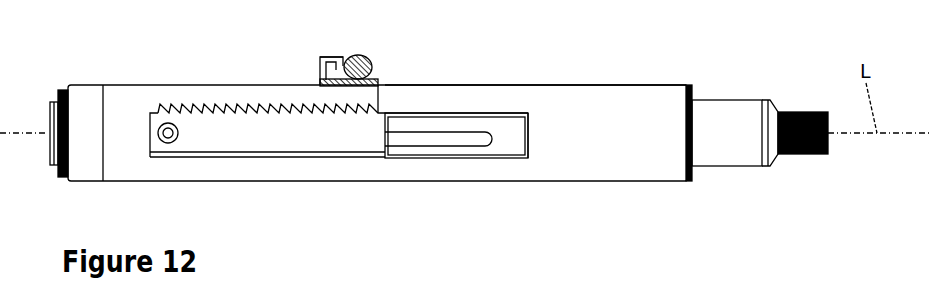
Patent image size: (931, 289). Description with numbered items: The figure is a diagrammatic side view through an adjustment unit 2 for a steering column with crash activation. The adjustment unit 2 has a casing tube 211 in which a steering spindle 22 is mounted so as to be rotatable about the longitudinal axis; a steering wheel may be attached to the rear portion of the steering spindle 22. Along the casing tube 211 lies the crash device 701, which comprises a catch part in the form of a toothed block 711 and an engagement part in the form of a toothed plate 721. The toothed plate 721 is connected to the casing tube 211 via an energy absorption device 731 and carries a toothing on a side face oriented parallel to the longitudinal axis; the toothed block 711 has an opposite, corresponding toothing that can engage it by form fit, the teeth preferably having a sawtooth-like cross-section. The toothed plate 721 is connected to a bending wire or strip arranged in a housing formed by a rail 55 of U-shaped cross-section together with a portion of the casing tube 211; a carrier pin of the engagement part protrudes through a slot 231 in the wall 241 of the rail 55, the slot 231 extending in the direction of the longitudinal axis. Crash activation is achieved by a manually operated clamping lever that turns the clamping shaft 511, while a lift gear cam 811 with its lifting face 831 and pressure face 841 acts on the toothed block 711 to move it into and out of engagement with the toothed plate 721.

The adjustment unit 2 is at (661, 60).
The casing tube 211 is at (571, 105).
The steering spindle 22 is at (723, 140).
The toothed plate (engagement part) 721 is at (327, 142).
The toothed block (catch part) 711 is at (352, 95).
The lifting face 831 is at (319, 59).
The pressure face 841 is at (318, 82).
The cam 811 is at (346, 56).
The clamping shaft 511 is at (369, 57).
The wall 241 is at (545, 141).
The slot 231 is at (425, 140).
The energy absorption device 731 is at (400, 103).
The crash device 701 is at (463, 98).
The rail 55 is at (541, 130).